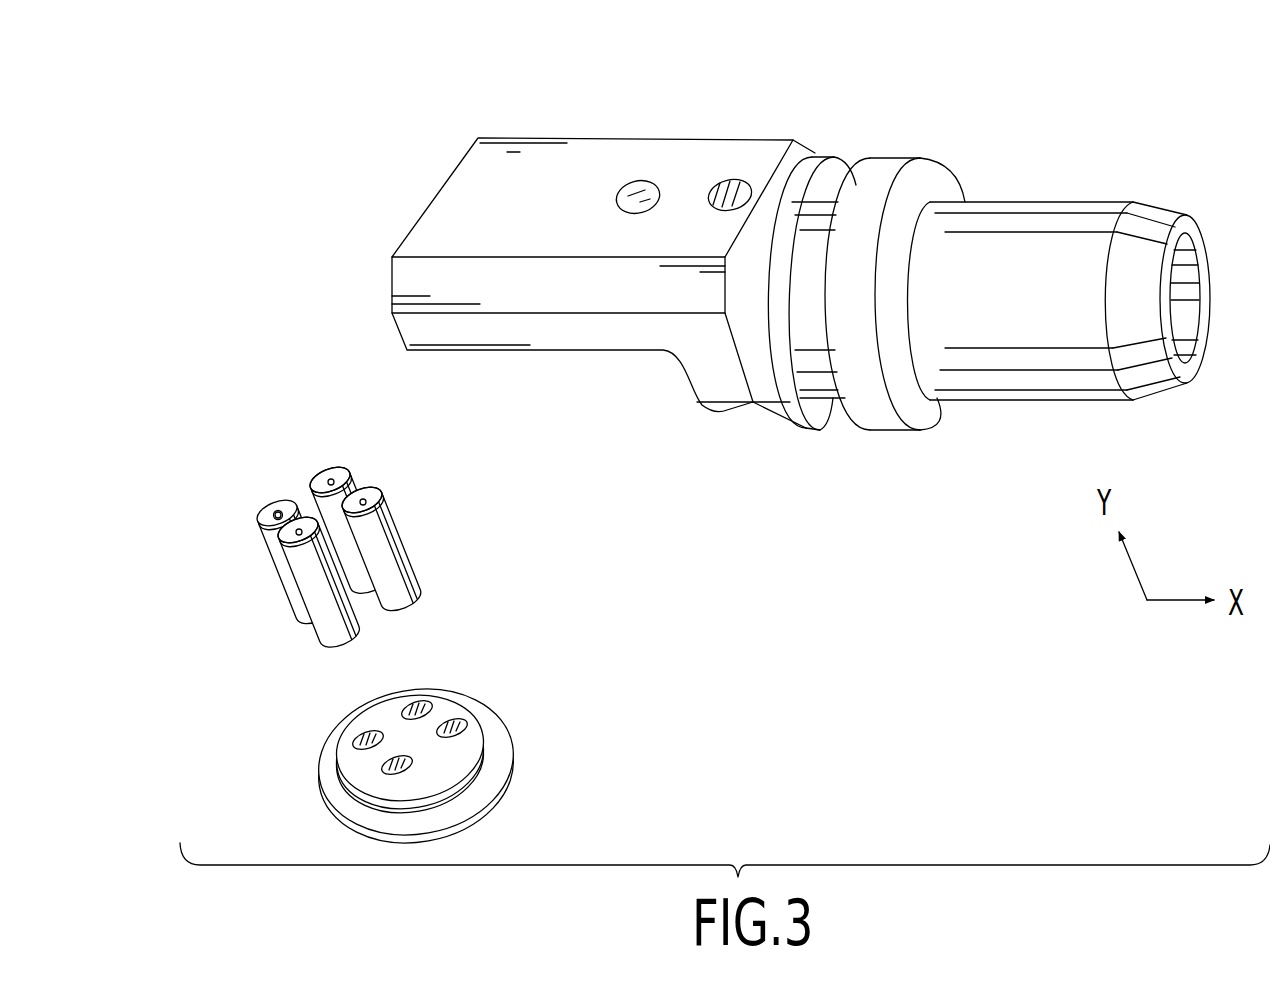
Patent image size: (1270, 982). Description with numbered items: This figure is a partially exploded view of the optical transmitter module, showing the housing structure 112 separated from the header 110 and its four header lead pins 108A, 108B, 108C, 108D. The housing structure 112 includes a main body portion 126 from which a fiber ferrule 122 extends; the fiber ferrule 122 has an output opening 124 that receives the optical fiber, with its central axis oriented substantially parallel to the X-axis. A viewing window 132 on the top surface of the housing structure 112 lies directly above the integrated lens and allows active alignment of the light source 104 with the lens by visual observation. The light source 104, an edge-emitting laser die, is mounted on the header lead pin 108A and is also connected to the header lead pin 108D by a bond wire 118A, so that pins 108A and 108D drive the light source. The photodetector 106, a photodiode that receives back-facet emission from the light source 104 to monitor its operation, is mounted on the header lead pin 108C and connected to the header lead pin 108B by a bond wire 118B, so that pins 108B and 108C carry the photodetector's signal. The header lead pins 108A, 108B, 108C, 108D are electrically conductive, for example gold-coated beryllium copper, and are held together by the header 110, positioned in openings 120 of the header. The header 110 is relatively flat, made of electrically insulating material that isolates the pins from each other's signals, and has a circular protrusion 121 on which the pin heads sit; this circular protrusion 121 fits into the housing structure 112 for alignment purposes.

The main body portion 126 is at (937, 102).
The fiber ferrule 122 is at (1188, 102).
The viewing window 132 is at (649, 180).
The output opening 124 is at (1226, 254).
The housing structure 112 is at (806, 428).
The light source 104 is at (360, 488).
The photodetector 106 is at (268, 500).
The bond wire 118A is at (357, 475).
The bond wire 118B is at (295, 500).
The header lead pin 108A is at (402, 558).
The header lead pin 108B is at (337, 645).
The header lead pin 108C is at (287, 587).
The header lead pin 108D is at (360, 587).
The openings 120 is at (370, 705).
The circular protrusion 121 is at (487, 704).
The header 110 is at (477, 790).